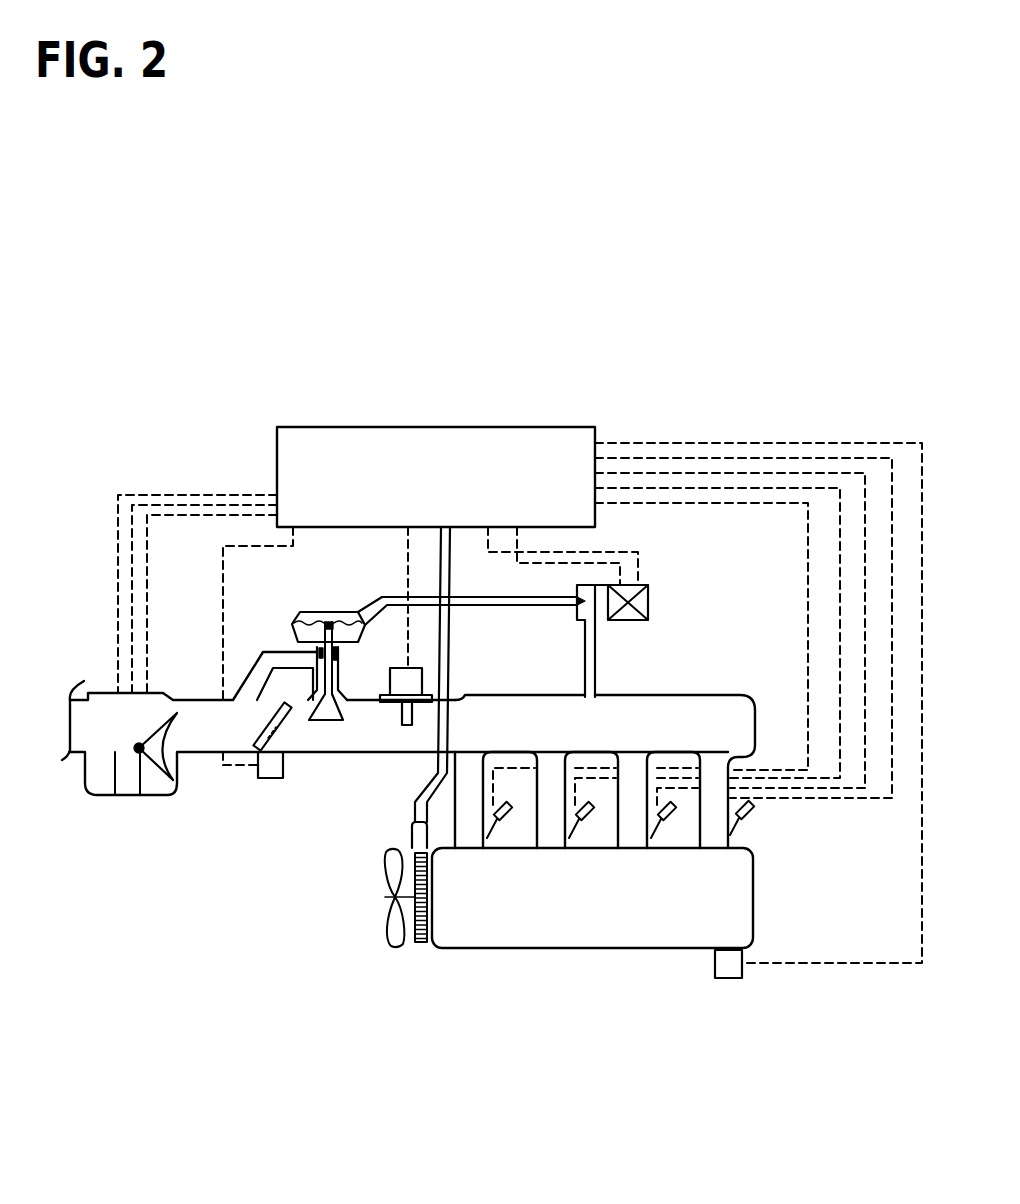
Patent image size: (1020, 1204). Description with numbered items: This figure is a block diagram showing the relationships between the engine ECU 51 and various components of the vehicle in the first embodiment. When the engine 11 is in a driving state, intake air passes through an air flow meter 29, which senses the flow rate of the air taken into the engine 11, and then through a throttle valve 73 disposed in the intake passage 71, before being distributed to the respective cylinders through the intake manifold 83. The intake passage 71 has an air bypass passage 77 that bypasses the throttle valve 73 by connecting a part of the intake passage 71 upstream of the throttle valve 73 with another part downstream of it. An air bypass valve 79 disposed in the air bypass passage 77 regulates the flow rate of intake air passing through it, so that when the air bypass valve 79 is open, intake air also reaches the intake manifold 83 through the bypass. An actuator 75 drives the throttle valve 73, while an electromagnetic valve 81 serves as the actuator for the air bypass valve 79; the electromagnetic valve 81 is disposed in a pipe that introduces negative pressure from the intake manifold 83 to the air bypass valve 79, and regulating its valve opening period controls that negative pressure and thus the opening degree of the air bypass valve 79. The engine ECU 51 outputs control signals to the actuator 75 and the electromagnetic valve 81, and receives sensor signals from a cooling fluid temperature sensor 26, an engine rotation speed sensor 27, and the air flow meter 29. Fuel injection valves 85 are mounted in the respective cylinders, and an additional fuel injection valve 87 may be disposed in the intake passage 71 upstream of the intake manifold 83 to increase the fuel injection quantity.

The engine 11 is at (693, 910).
The cooling fluid temperature sensor 26 is at (732, 978).
The engine rotation speed sensor 27 is at (412, 830).
The air flow meter 29 is at (132, 730).
The engine ECU 51 is at (363, 452).
The intake passage 71 is at (377, 743).
The throttle valve 73 is at (287, 713).
The actuator 75 is at (272, 778).
The air bypass passage 77 is at (262, 672).
The air bypass valve 79 is at (312, 610).
The electromagnetic valve 81 is at (648, 602).
The intake manifold 83 is at (608, 745).
The fuel injection valves 85 is at (787, 841).
The additional fuel injection valve 87 is at (415, 683).